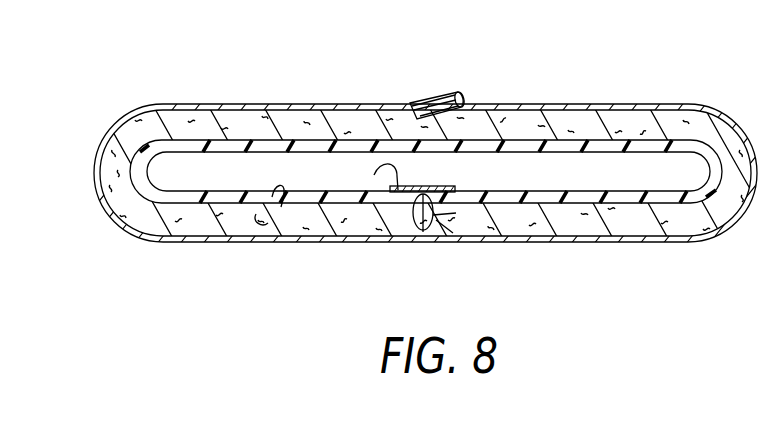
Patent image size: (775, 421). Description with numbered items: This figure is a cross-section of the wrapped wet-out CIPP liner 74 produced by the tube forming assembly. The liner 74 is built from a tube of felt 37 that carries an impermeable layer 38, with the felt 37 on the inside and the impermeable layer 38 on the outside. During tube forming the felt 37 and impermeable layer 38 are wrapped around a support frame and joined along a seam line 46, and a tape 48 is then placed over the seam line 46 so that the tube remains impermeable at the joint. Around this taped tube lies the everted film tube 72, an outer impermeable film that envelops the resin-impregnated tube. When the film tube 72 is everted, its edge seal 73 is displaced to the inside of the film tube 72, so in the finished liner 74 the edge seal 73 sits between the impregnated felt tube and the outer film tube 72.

The wrapped wet-out CIPP liner 74 is at (714, 85).
The film tube 72 is at (178, 104).
The edge seal 73 is at (448, 92).
The felt 37 is at (139, 224).
The impermeable layer 38 is at (272, 197).
The tape 48 is at (374, 175).
The seam line 46 is at (432, 218).